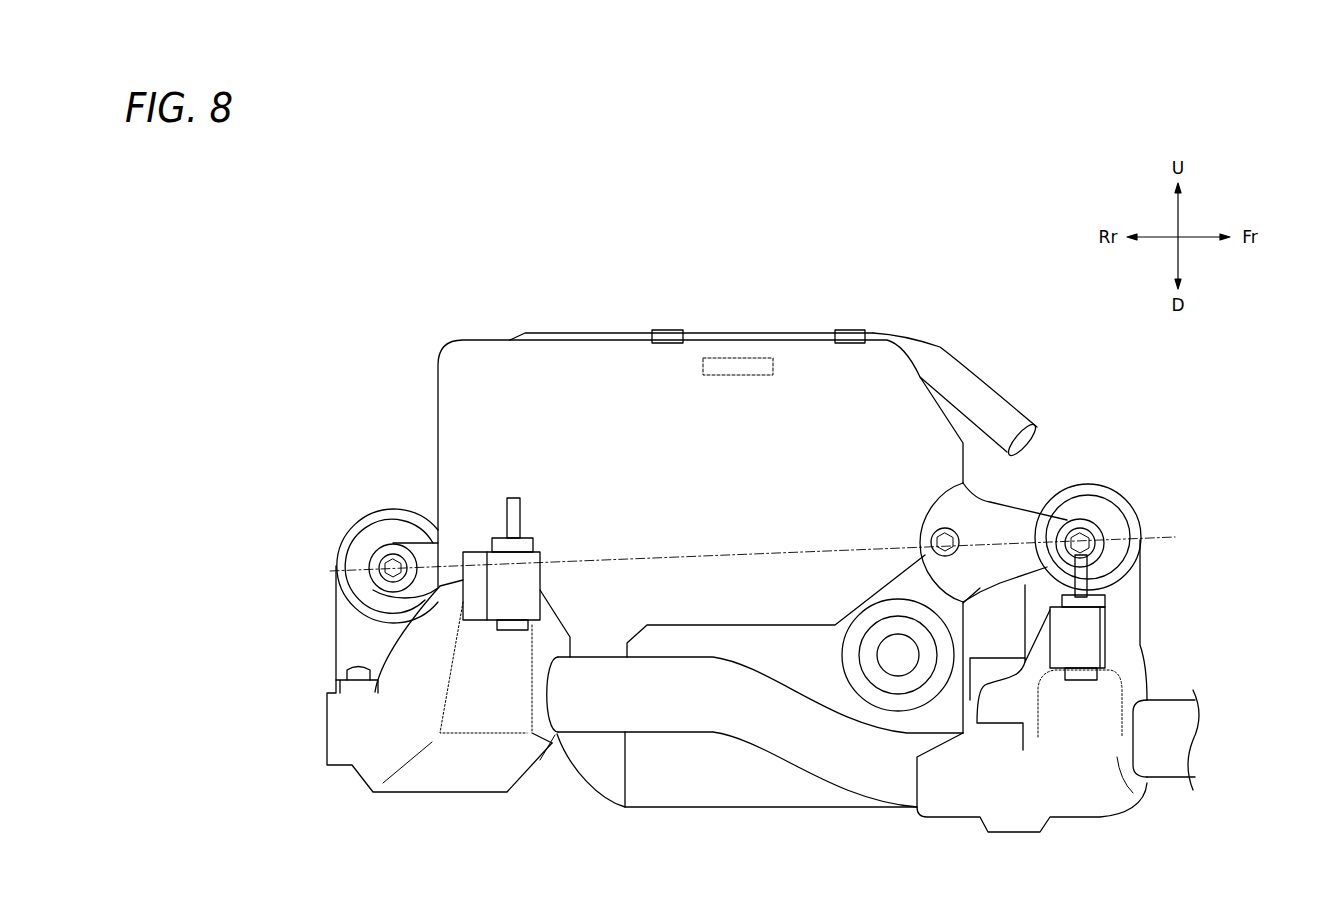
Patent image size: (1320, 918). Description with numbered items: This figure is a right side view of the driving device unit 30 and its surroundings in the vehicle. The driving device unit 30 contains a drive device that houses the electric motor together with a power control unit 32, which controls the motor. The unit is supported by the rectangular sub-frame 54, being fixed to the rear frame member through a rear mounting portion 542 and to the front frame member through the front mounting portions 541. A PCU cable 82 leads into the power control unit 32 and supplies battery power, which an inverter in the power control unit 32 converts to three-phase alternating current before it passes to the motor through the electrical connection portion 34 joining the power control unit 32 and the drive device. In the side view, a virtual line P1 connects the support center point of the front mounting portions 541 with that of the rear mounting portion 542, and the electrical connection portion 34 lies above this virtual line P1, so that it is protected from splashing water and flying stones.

The driving device unit 30 is at (433, 323).
The power control unit (PCU) 32 is at (482, 338).
The electrical connection portion 34 is at (748, 356).
The PCU cable 82 is at (995, 377).
The virtual line P1 is at (1098, 493).
The rear mounting portion 542 is at (333, 603).
The front mounting portions 541 is at (1145, 600).
The sub-frame 54 is at (1203, 733).